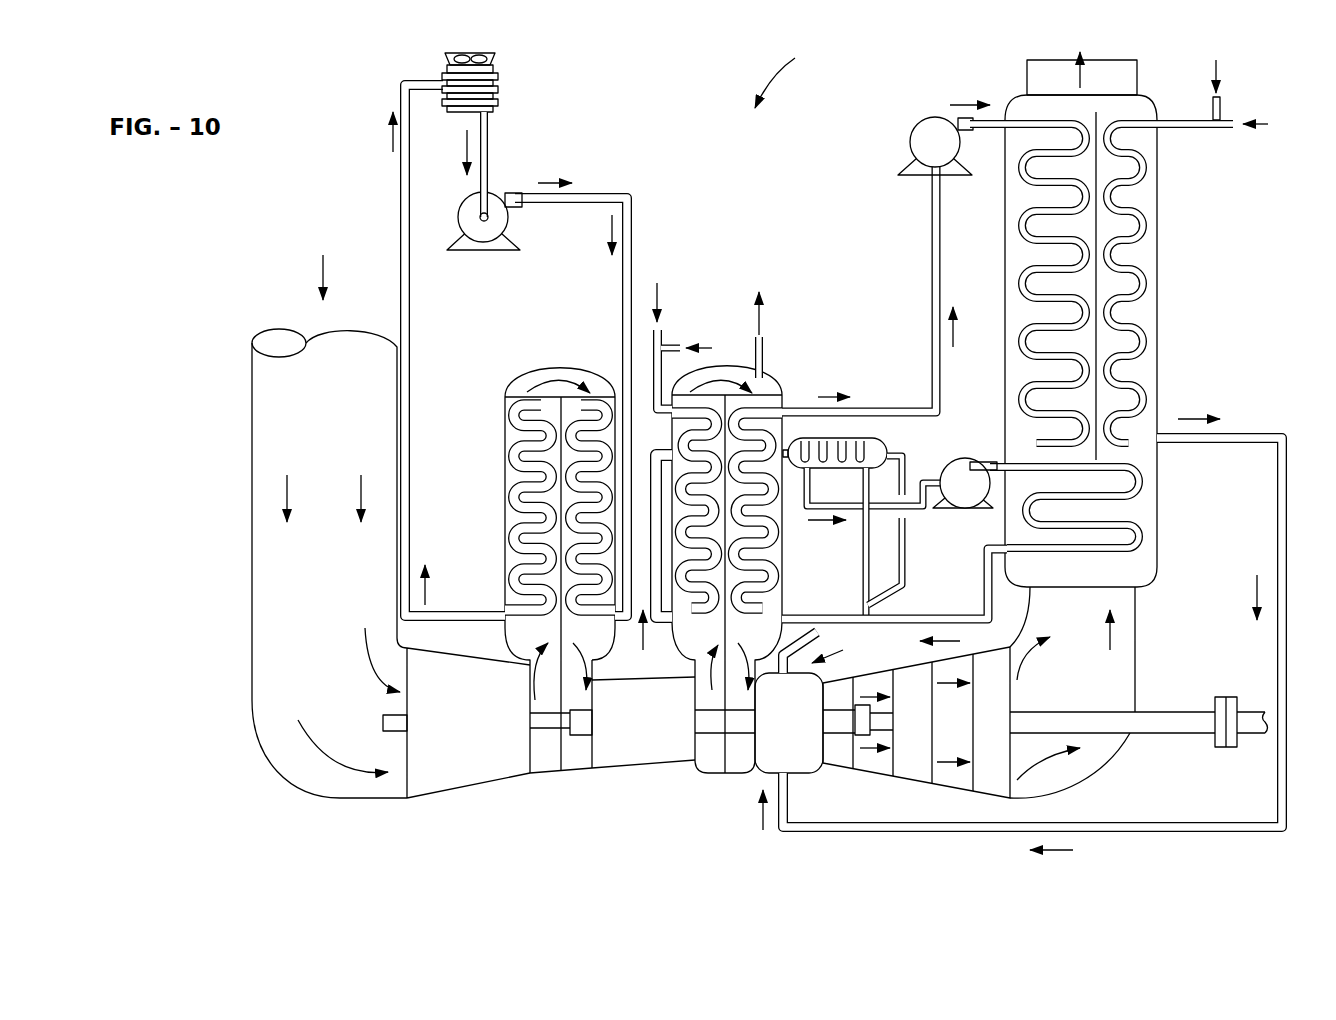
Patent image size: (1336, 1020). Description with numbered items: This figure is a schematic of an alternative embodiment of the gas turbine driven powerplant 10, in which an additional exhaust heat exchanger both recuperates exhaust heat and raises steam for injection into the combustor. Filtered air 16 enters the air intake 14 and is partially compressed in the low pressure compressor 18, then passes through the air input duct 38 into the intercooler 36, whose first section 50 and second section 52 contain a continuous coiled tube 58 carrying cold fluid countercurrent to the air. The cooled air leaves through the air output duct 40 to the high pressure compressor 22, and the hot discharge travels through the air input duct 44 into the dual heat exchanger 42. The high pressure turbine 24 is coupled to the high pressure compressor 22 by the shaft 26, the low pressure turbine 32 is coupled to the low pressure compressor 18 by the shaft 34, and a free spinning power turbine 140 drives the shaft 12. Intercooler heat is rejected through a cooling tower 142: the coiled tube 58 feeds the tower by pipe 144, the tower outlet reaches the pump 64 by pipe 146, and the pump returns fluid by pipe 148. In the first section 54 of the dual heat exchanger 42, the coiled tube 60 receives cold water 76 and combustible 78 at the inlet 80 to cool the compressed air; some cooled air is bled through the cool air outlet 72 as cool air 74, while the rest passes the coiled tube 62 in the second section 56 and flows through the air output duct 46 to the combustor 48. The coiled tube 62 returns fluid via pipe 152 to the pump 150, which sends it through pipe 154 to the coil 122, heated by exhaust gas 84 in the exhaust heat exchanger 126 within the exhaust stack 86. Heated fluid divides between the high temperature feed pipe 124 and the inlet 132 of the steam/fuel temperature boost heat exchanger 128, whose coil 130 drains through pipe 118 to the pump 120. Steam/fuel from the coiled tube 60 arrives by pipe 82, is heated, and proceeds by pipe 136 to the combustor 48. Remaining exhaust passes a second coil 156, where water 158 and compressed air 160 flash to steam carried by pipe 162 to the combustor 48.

The gas turbine driven powerplant 10 is at (795, 77).
The shaft 12 is at (1155, 712).
The air intake 14 is at (398, 407).
The filtered air 16 is at (322, 261).
The low pressure compressor 18 is at (470, 780).
The high pressure compressor 22 is at (630, 760).
The high pressure turbine 24 is at (843, 747).
The shaft 26 is at (580, 737).
The low pressure turbine 32 is at (917, 760).
The shaft 34 is at (383, 728).
The intercooler 36 is at (573, 370).
The air input duct 38 is at (533, 700).
The air output duct 40 is at (593, 697).
The dual heat exchanger 42 is at (768, 377).
The air input duct 44 is at (713, 703).
The air output duct 46 is at (740, 700).
The combustor 48 is at (793, 757).
The first section 50 is at (520, 522).
The second section 52 is at (590, 488).
The first section 54 is at (700, 575).
The second section 56 is at (757, 595).
The coiled tube 58 is at (518, 425).
The coiled tube 60 is at (652, 521).
The coiled tube 62 is at (763, 430).
The pump 64 is at (460, 218).
The cool air outlet 72 is at (763, 347).
The cool air 74 is at (756, 297).
The cold water 76 is at (655, 289).
The combustible 78 is at (703, 348).
The inlet 80 is at (667, 340).
The pipe 82 is at (659, 643).
The exhaust gas 84 is at (1079, 55).
The exhaust stack 86 is at (1140, 70).
The pipe 118 is at (810, 500).
The pump 120 is at (975, 460).
The coil 122 is at (1030, 242).
The high temperature feed pipe 124 is at (837, 622).
The exhaust heat exchanger 126 is at (1130, 512).
The steam/fuel temperature boost heat exchanger 128 is at (890, 436).
The coil 130 is at (847, 440).
The inlet 132 is at (885, 603).
The pipe 136 is at (907, 557).
The power turbine 140 is at (987, 793).
The cooling tower 142 is at (498, 85).
The pipe 144 is at (405, 210).
The pipe 146 is at (485, 145).
The pipe 148 is at (633, 225).
The pump 150 is at (908, 128).
The pipe 152 is at (930, 240).
The pipe 154 is at (1000, 115).
The second coil 156 is at (1140, 145).
The water 158 is at (1216, 76).
The compressed air 160 is at (1235, 124).
The pipe 162 is at (1195, 822).